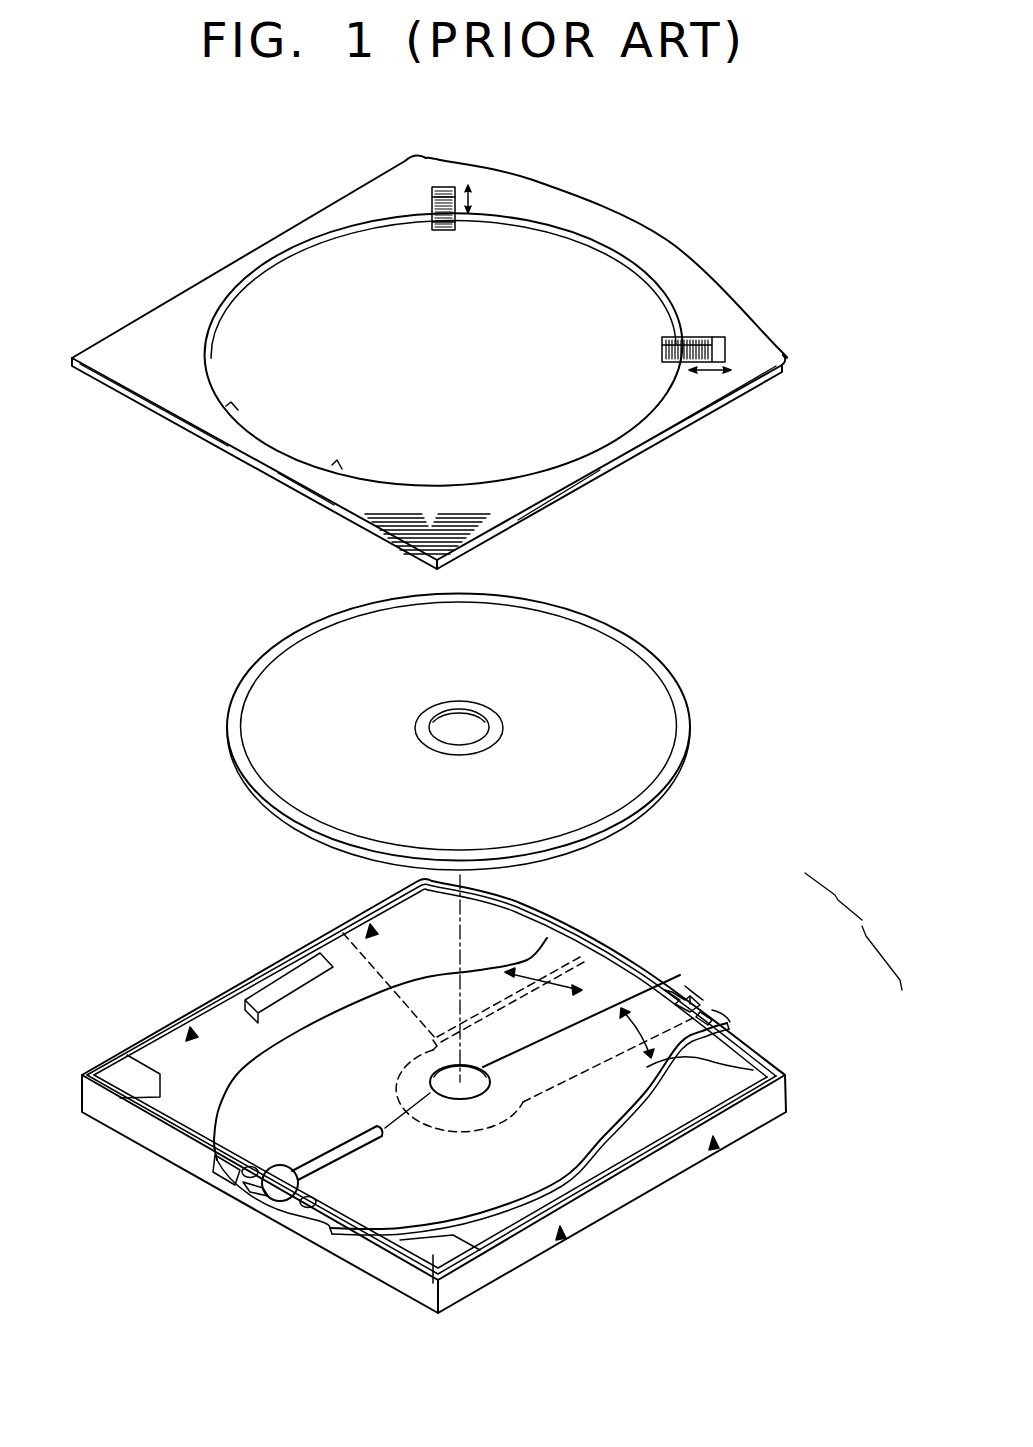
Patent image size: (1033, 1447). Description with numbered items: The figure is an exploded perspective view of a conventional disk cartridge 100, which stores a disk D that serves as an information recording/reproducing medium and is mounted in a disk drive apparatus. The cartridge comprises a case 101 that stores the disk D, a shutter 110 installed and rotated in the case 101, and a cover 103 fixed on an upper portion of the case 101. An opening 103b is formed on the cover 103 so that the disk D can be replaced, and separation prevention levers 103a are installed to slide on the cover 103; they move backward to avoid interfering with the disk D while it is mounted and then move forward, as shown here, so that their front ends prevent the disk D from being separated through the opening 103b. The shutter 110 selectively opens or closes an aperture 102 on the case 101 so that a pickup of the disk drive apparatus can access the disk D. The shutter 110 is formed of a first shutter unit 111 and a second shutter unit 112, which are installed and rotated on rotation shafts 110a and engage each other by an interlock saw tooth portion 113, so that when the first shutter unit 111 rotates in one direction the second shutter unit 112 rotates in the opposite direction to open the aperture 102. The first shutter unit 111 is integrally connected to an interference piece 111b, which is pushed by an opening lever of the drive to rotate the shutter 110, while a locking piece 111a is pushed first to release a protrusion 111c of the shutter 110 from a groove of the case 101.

The disk cartridge 100 is at (429, 333).
The cover 103 is at (188, 305).
The separation prevention levers 103a is at (448, 200).
The opening 103b is at (557, 262).
The disk D is at (277, 672).
The case 101 is at (683, 1178).
The aperture 102 is at (343, 933).
The second shutter unit 112 is at (597, 980).
The shutter 110 is at (513, 1065).
The rotation shafts 110a is at (680, 998).
The first shutter unit 111 is at (612, 1091).
The locking piece 111a is at (703, 1012).
The interference piece 111b is at (722, 1016).
The protrusion 111c is at (687, 990).
The interlock saw tooth portion 113 is at (278, 1165).